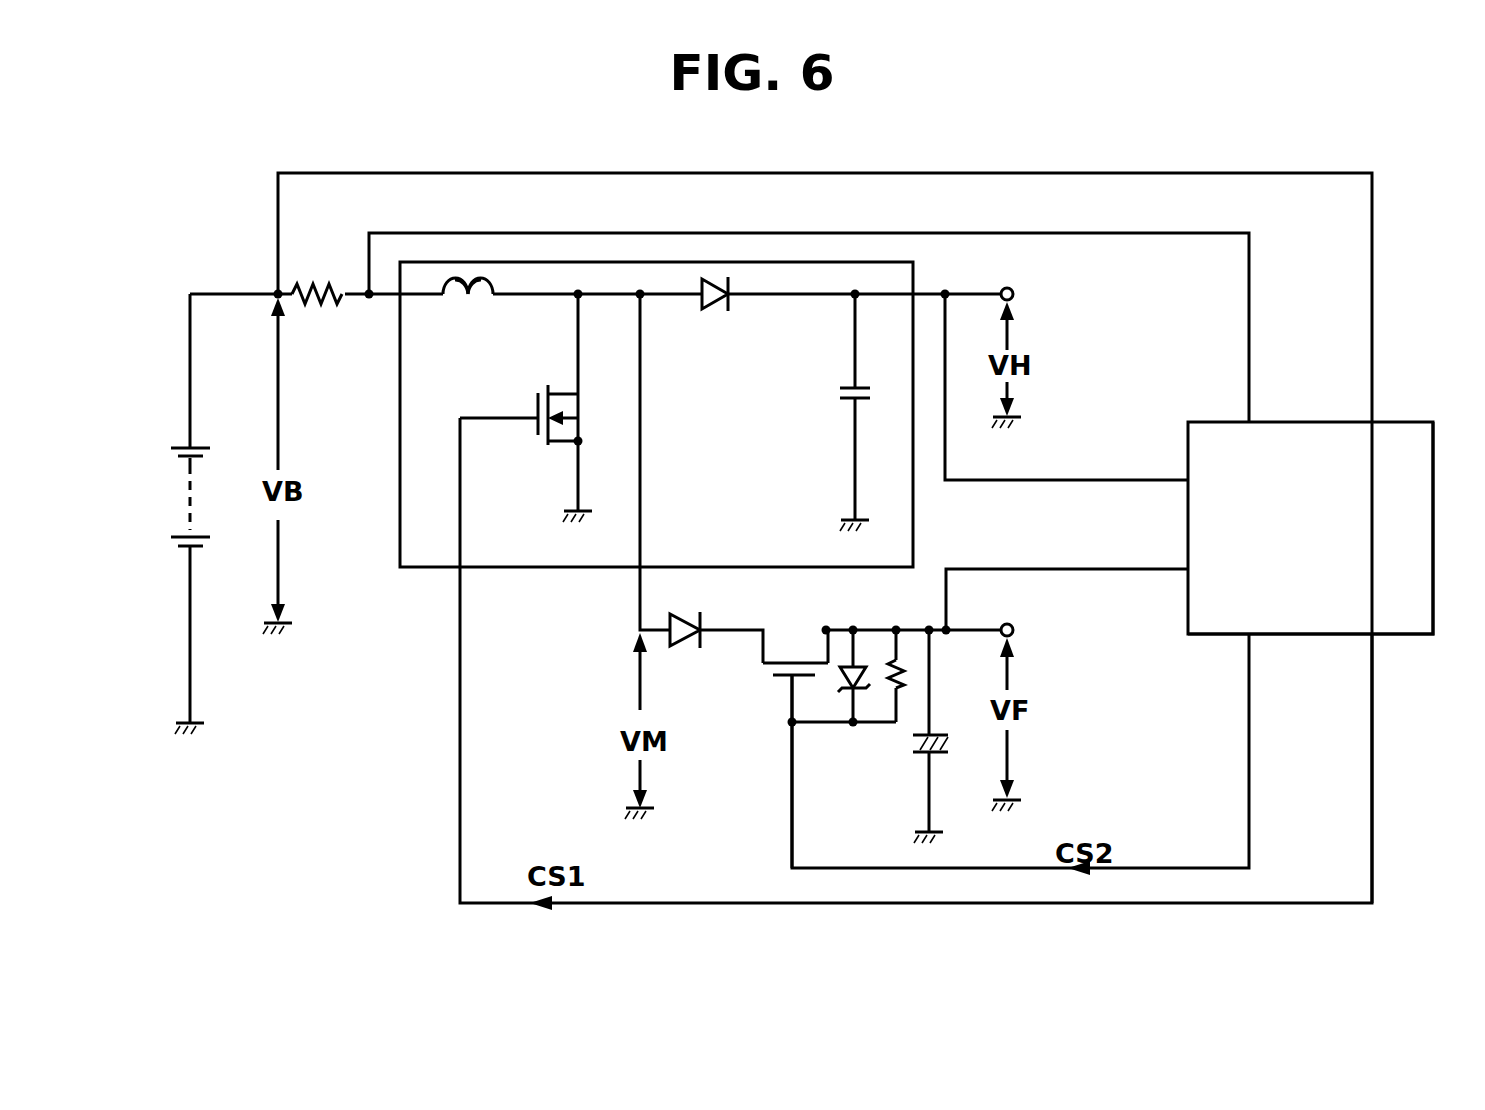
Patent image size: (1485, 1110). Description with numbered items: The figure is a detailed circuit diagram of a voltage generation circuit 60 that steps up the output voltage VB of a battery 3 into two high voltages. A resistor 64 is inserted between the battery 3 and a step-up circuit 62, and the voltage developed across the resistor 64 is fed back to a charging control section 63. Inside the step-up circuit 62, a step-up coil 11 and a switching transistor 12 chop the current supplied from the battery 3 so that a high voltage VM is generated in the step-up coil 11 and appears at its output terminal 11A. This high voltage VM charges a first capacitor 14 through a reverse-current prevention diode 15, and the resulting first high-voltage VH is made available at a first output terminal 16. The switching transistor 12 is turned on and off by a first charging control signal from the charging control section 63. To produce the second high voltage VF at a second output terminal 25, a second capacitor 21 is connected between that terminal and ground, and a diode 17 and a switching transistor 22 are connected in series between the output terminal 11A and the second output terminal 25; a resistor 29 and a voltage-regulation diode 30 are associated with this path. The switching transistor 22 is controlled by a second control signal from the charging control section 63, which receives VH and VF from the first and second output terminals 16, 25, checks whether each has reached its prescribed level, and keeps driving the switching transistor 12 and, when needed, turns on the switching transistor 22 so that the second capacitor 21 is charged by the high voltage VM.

The battery 3 is at (191, 487).
The step-up coil 11 is at (468, 306).
The output terminal of the step-up coil 11A is at (583, 298).
The switching transistor 12 is at (534, 435).
The first capacitor 14 is at (838, 392).
The reverse-current prevention diode 15 is at (716, 306).
The first output terminal 16 is at (1014, 294).
The diode 17 is at (684, 612).
The second capacitor 21 is at (933, 732).
The switching transistor 22 is at (789, 650).
The second output terminal 25 is at (1018, 612).
The resistor 29 is at (896, 657).
The zener diode 30 is at (846, 706).
The voltage generation circuit 60 is at (1388, 220).
The step-up circuit 62 is at (404, 570).
The charging control section 63 is at (1420, 541).
The resistor 64 is at (318, 302).